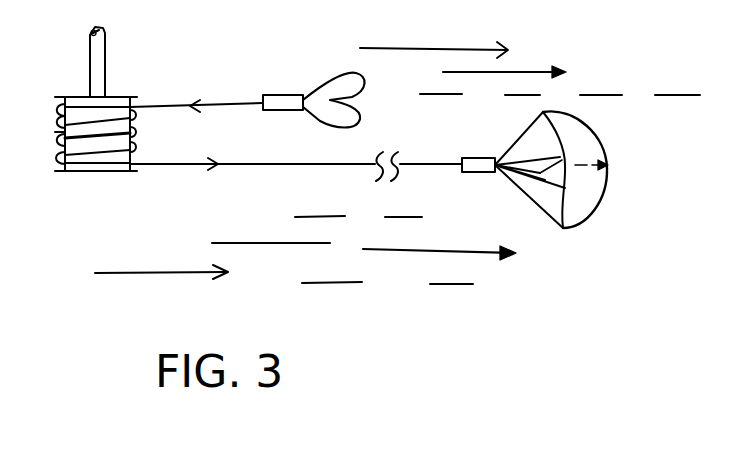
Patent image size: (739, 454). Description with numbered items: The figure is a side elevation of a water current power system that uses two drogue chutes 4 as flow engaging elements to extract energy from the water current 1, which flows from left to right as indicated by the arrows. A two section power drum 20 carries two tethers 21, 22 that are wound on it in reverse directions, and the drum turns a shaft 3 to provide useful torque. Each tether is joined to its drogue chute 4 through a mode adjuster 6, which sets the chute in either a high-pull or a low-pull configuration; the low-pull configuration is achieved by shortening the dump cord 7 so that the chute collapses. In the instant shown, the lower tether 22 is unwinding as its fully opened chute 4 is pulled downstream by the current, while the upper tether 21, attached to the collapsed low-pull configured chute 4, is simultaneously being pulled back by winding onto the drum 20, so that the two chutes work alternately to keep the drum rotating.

The water current 1 is at (473, 37).
The shaft 3 is at (115, 48).
The drogue chute 4 is at (367, 115).
The mode adjuster 6 is at (285, 102).
The dump cord 7 is at (540, 183).
The two section power drum 20 is at (88, 163).
The tether 21 is at (173, 93).
The tether 22 is at (187, 170).